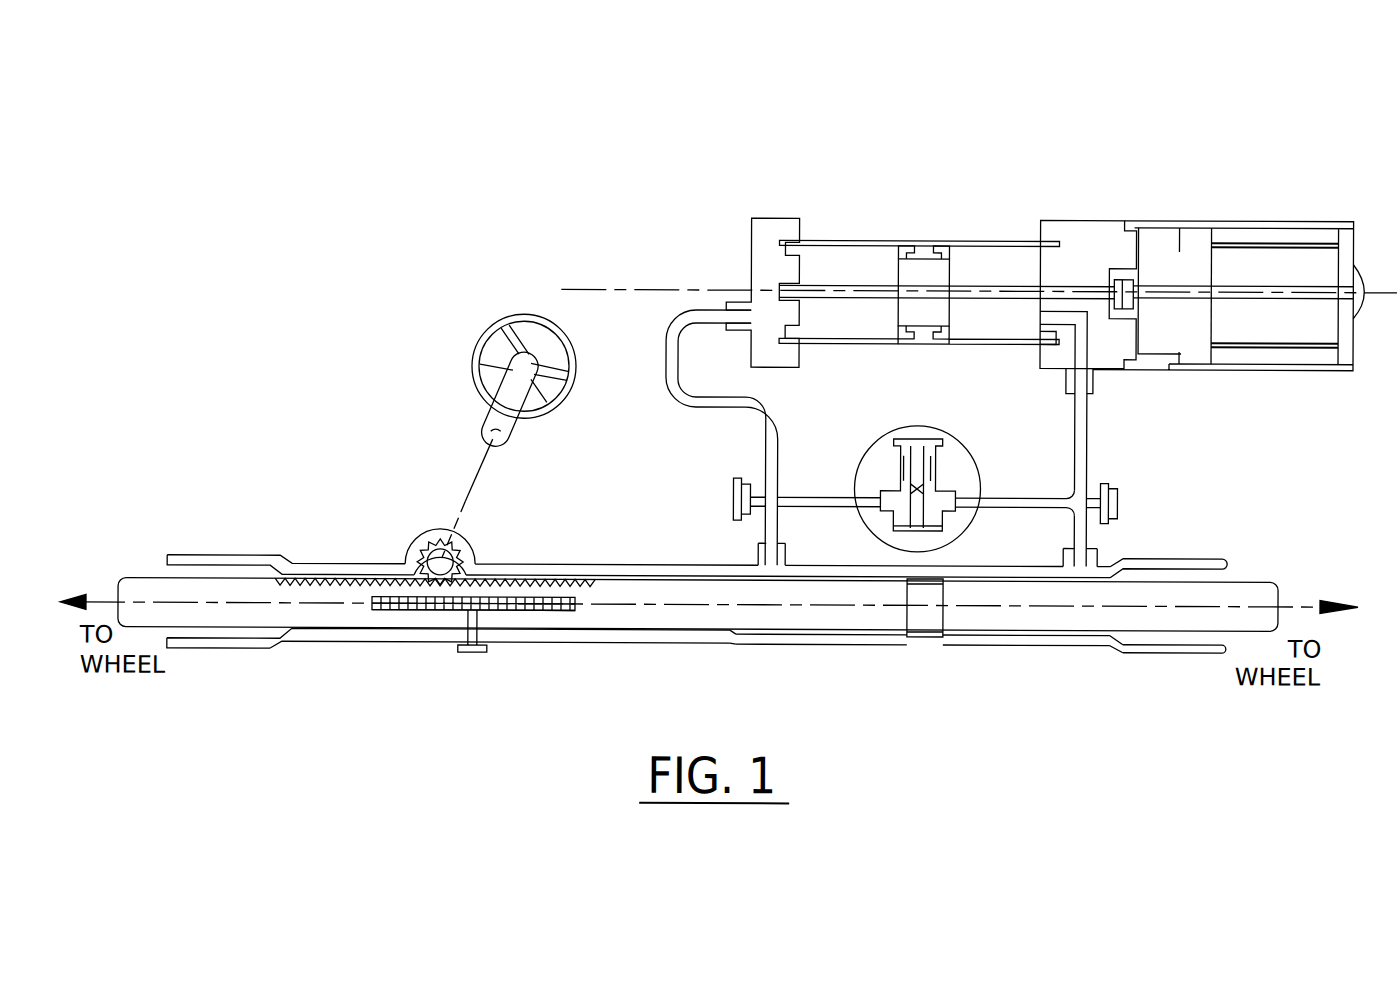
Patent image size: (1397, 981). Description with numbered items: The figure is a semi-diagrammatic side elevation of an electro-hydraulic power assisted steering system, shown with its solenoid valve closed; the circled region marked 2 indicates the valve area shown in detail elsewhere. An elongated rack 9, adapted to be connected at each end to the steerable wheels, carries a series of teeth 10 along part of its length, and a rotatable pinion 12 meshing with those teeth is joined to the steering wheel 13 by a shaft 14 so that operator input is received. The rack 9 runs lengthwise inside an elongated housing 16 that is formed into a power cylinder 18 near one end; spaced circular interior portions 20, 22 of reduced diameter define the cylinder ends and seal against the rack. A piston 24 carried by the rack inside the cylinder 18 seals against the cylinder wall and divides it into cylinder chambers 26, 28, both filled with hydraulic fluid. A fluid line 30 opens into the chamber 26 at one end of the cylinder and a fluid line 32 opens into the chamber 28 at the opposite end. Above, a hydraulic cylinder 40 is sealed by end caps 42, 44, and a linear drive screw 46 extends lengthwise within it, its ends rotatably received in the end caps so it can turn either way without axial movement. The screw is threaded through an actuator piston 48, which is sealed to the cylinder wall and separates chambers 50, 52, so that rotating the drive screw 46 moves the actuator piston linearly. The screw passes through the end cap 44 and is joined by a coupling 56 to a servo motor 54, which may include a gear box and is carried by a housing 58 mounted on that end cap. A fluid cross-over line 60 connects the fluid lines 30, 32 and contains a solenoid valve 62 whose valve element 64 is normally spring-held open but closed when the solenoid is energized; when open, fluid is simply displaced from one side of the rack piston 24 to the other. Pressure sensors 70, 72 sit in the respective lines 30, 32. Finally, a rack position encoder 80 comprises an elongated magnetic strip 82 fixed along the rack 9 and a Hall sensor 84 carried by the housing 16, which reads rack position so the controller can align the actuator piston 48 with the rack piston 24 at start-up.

The detail view circle (FIG. 2 area) 2 is at (858, 466).
The rack 9 is at (340, 628).
The teeth 10 is at (318, 576).
The pinion 12 is at (432, 545).
The steering wheel 13 is at (478, 338).
The shaft 14 is at (497, 410).
The housing 16 is at (606, 646).
The power cylinder 18 is at (1018, 646).
The circular interior portion 20 is at (730, 640).
The circular interior portion 22 is at (1120, 647).
The piston 24 is at (915, 632).
The cylinder chamber 26 is at (818, 636).
The cylinder chamber 28 is at (1080, 642).
The fluid line 30 is at (755, 418).
The fluid line 32 is at (1087, 440).
The hydraulic cylinder 40 is at (870, 238).
The end cap 42 is at (752, 216).
The end cap 44 is at (1078, 218).
The linear drive screw 46 is at (853, 298).
The actuator piston 48 is at (921, 262).
The chamber 50 is at (834, 256).
The chamber 52 is at (990, 252).
The servo motor 54 is at (1250, 262).
The coupling 56 is at (1132, 285).
The housing 58 is at (1192, 332).
The fluid cross-over line 60 is at (1025, 497).
The solenoid valve 62 is at (902, 437).
The valve element 64 is at (944, 444).
The pressure sensor 70 is at (733, 497).
The pressure sensor 72 is at (1118, 500).
The rack position encoder 80 is at (450, 647).
The magnetic strip 82 is at (540, 594).
The Hall sensor 84 is at (470, 655).